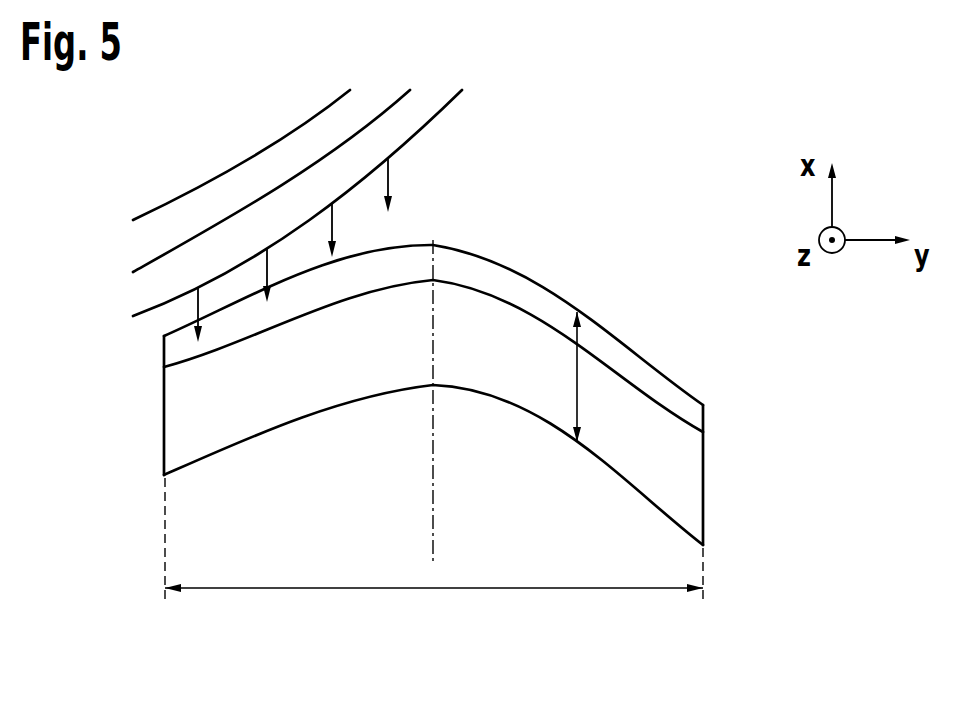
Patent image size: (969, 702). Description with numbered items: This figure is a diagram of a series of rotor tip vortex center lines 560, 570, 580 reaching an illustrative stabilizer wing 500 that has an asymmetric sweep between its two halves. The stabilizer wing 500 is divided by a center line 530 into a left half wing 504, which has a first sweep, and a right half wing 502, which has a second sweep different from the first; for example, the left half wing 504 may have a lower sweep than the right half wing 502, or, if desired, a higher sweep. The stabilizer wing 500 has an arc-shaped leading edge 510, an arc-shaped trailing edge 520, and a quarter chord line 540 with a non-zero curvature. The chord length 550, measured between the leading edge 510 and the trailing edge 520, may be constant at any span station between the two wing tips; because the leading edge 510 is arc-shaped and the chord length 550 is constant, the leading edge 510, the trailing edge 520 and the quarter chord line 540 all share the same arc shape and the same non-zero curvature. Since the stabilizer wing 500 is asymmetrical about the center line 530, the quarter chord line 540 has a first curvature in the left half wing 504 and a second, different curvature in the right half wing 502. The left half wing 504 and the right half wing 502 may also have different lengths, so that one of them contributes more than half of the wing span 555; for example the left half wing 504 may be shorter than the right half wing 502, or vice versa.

The stabilizer wing 500 is at (630, 185).
The right half wing 502 is at (603, 478).
The left half wing 504 is at (246, 454).
The leading edge 510 is at (522, 270).
The trailing edge 520 is at (335, 404).
The center line 530 is at (433, 482).
The quarter chord line 540 is at (643, 387).
The chord length 550 is at (580, 388).
The wing span 555 is at (553, 590).
The rotor tip vortex center line 560 is at (188, 293).
The rotor tip vortex center line 570 is at (191, 240).
The rotor tip vortex center line 580 is at (193, 191).